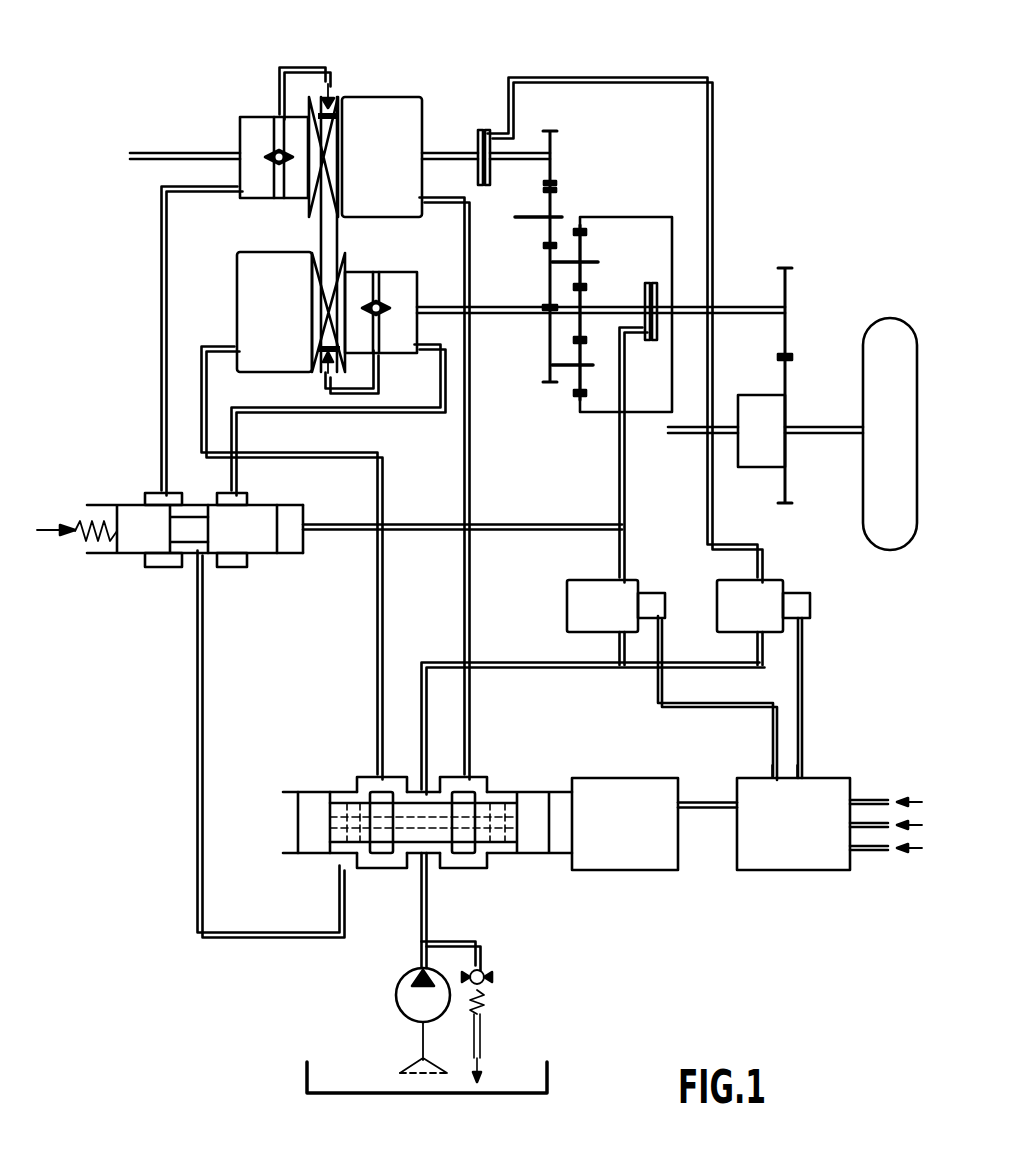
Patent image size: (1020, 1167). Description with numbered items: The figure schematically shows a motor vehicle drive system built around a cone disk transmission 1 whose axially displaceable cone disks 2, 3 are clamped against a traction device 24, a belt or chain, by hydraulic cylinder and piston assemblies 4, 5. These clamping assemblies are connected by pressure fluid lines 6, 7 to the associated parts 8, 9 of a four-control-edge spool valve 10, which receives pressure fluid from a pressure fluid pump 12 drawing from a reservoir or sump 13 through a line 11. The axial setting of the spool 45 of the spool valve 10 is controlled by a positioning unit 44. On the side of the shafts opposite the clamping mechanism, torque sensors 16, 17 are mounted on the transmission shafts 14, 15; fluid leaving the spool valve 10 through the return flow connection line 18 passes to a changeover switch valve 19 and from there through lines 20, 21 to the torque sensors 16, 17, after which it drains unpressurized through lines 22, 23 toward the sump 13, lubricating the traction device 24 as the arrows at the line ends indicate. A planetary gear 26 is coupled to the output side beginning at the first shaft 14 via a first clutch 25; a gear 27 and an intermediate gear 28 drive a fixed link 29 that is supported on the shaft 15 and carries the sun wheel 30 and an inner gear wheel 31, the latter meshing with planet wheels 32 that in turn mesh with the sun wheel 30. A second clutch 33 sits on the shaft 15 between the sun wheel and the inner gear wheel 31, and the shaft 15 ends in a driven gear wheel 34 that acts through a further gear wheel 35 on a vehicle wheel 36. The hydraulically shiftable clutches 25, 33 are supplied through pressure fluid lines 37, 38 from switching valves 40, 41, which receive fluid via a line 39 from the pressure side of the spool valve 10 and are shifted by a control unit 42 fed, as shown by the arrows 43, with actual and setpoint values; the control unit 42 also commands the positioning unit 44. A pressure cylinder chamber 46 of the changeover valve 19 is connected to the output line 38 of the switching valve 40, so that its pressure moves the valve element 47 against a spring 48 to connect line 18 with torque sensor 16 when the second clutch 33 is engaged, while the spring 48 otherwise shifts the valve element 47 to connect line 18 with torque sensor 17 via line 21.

The cone disk transmission 1 is at (313, 211).
The cone disk 2 is at (340, 140).
The cone disk 3 is at (315, 310).
The hydraulic cylinder and piston assembly 4 is at (402, 118).
The hydraulic cylinder and piston assembly 5 is at (248, 318).
The pressure fluid line 6 is at (468, 560).
The pressure fluid line 7 is at (377, 680).
The valve part 8 is at (471, 782).
The valve part 9 is at (380, 860).
The four-control edge spool valve 10 is at (392, 823).
The line 11 is at (420, 920).
The pressure fluid pump 12 is at (405, 999).
The pressure fluid reservoir 13 is at (343, 1074).
The transmission shaft 14 is at (188, 150).
The transmission shaft 15 is at (464, 315).
The torque sensor 16 is at (254, 120).
The torque sensor 17 is at (403, 333).
The return flow connection line 18 is at (197, 680).
The changeover switch valve 19 is at (55, 507).
The line 20 is at (163, 401).
The line 21 is at (370, 415).
The line 22 is at (303, 66).
The line 23 is at (378, 388).
The traction device 24 is at (323, 233).
The first clutch 25 is at (479, 130).
The planetary gear 26 is at (625, 256).
The gear 27 is at (554, 146).
The intermediate gear 28 is at (555, 204).
The fixed link 29 is at (547, 284).
The sun wheel 30 is at (583, 304).
The inner gear wheel 31 is at (673, 252).
The planet wheels 32 is at (584, 244).
The second clutch 33 is at (653, 340).
The driven gear wheel 34 is at (787, 338).
The further gear wheel 35 is at (787, 382).
The wheel 36 is at (875, 489).
The pressure fluid line 37 is at (553, 78).
The pressure fluid line 38 is at (626, 478).
The line 39 is at (572, 668).
The switching valve 40 is at (577, 609).
The switching valve 41 is at (766, 596).
The control unit 42 is at (792, 850).
The arrows 43 is at (877, 830).
The positioning unit 44 is at (556, 884).
The spool 45 is at (437, 837).
The pressure cylinder chamber 46 is at (289, 544).
The valve element 47 is at (132, 542).
The spring 48 is at (85, 542).